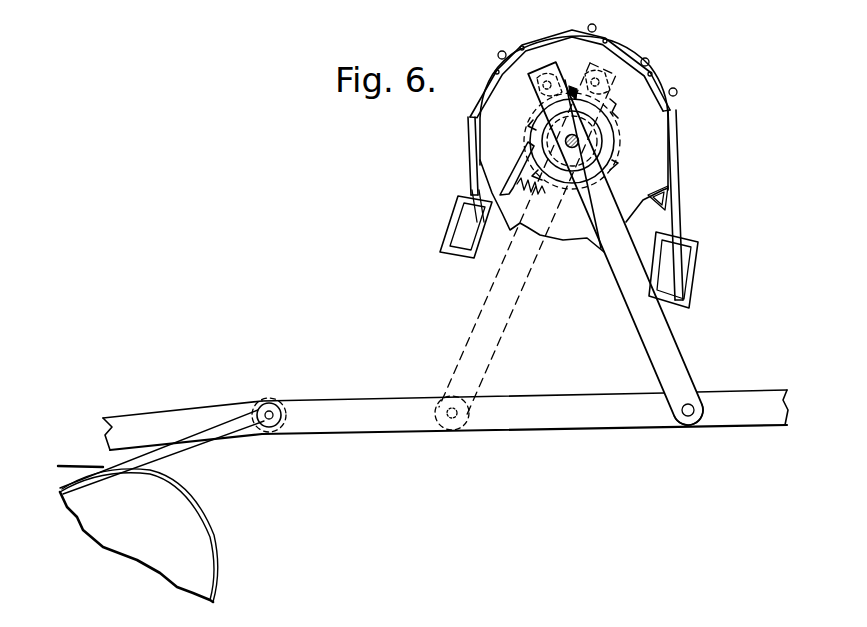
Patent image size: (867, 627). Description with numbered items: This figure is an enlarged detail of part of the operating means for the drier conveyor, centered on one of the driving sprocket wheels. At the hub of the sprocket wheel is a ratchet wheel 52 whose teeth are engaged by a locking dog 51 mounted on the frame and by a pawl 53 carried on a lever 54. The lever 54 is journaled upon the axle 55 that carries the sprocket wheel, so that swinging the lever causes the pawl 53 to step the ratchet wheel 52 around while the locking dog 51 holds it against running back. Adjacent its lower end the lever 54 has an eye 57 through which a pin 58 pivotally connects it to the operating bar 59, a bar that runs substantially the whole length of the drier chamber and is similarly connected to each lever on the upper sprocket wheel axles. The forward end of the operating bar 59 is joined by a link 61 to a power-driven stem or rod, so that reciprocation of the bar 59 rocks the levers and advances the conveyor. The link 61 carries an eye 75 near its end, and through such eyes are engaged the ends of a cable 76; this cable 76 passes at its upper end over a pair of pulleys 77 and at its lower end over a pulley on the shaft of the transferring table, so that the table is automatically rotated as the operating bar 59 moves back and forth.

The locking dog 51 is at (531, 156).
The ratchet wheel 52 is at (539, 121).
The pawl 53 is at (573, 90).
The lever 54 is at (636, 260).
The axle 55 is at (580, 141).
The eye 57 is at (700, 398).
The pin 58 is at (688, 403).
The operating bar 59 is at (769, 397).
The link 61 is at (161, 418).
The eye 75 is at (270, 403).
The cable 76 is at (216, 544).
The pulley 77 is at (183, 523).